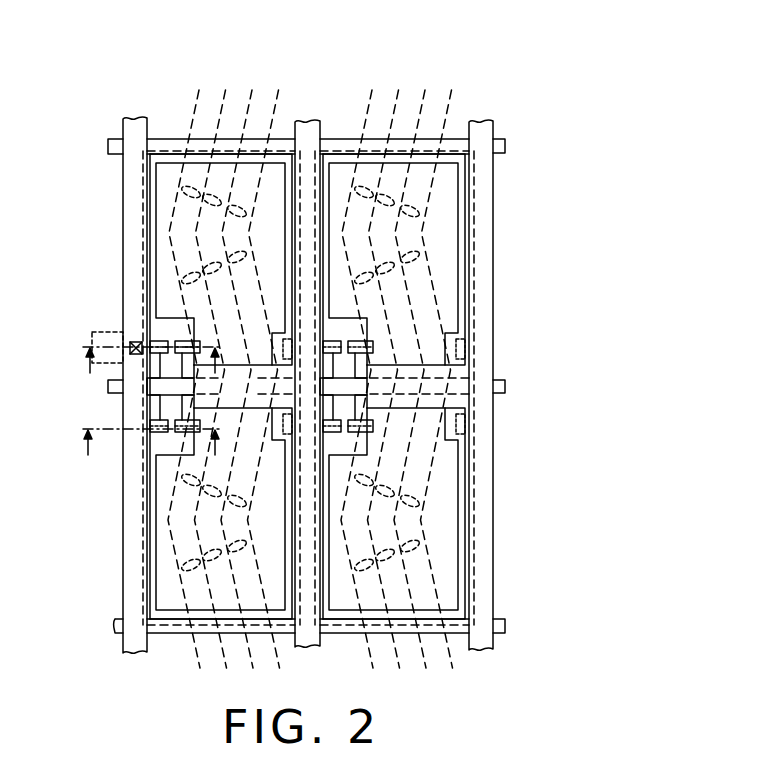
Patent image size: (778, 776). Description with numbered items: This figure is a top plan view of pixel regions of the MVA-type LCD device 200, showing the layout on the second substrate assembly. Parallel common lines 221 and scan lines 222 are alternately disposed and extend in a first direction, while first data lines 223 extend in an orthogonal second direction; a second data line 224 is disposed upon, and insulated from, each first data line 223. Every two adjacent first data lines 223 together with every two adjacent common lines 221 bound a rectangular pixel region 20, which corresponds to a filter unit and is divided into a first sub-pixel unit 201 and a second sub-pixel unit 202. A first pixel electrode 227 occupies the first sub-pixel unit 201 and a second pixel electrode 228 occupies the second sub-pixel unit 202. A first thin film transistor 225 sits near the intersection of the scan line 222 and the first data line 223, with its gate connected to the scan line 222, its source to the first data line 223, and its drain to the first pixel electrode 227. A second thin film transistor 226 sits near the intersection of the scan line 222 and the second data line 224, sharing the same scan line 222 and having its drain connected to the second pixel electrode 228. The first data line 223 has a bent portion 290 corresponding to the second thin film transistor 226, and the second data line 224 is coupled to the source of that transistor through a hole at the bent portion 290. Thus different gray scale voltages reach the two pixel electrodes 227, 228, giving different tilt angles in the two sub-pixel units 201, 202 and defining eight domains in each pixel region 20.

The LCD device 200 is at (330, 53).
The pixel region 20 is at (172, 149).
The second data line 224 is at (133, 125).
The first data line 223 is at (123, 348).
The common line 221 is at (108, 147).
The second pixel electrode 228 is at (170, 187).
The second sub-pixel unit 202 is at (122, 253).
The second thin film transistor 226 is at (172, 334).
The bent portion 290 is at (98, 336).
The scan line 222 is at (148, 391).
The first thin film transistor 225 is at (168, 453).
The first sub-pixel unit 201 is at (122, 547).
The first pixel electrode 227 is at (168, 573).